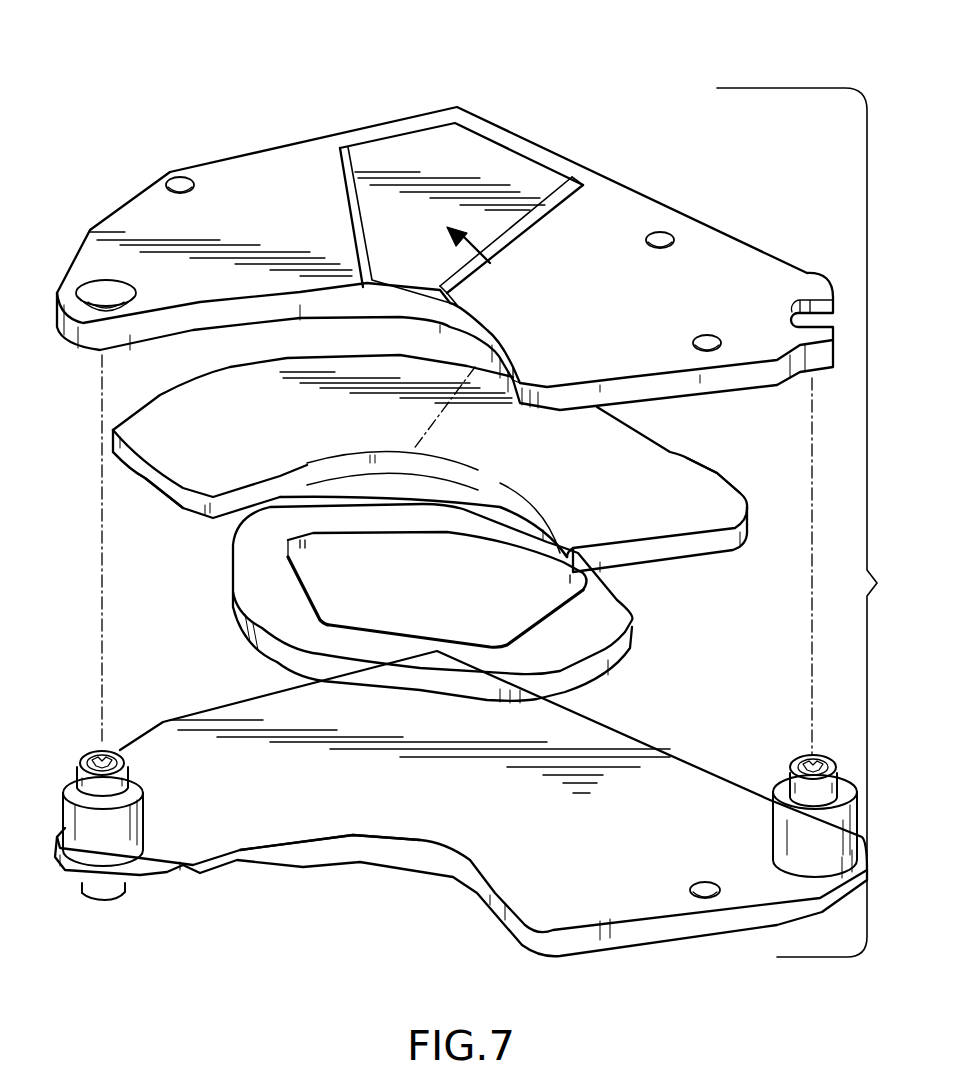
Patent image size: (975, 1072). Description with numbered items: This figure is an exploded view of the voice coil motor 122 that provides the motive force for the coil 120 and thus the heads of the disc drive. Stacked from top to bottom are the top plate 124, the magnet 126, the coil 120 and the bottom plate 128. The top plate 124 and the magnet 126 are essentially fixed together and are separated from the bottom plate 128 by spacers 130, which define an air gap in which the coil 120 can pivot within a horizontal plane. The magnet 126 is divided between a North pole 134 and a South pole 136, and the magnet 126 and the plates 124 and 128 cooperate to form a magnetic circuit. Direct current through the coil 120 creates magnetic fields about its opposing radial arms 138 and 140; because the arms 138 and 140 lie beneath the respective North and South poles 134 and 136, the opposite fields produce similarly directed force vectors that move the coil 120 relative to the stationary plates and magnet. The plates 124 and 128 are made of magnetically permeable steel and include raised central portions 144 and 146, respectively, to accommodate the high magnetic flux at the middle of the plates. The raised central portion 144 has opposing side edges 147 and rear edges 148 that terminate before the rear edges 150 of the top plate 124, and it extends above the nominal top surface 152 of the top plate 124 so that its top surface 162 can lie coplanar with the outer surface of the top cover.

The coil 120 is at (370, 547).
The voice coil motor 122 is at (817, 522).
The top plate 124 is at (690, 218).
The magnet 126 is at (683, 458).
The bottom plate 128 is at (693, 940).
The spacers 130 is at (73, 813).
The North pole 134 is at (187, 463).
The South pole 136 is at (667, 520).
The radial arm 138 is at (273, 603).
The radial arm 140 is at (580, 627).
The raised central portion 144 is at (483, 257).
The raised central portion 146 is at (398, 870).
The side edges 147 is at (353, 223).
The rear edges 148 is at (397, 130).
The rear edges 150 is at (437, 107).
The nominal top surface 152 is at (270, 167).
The top surface 162 is at (493, 160).